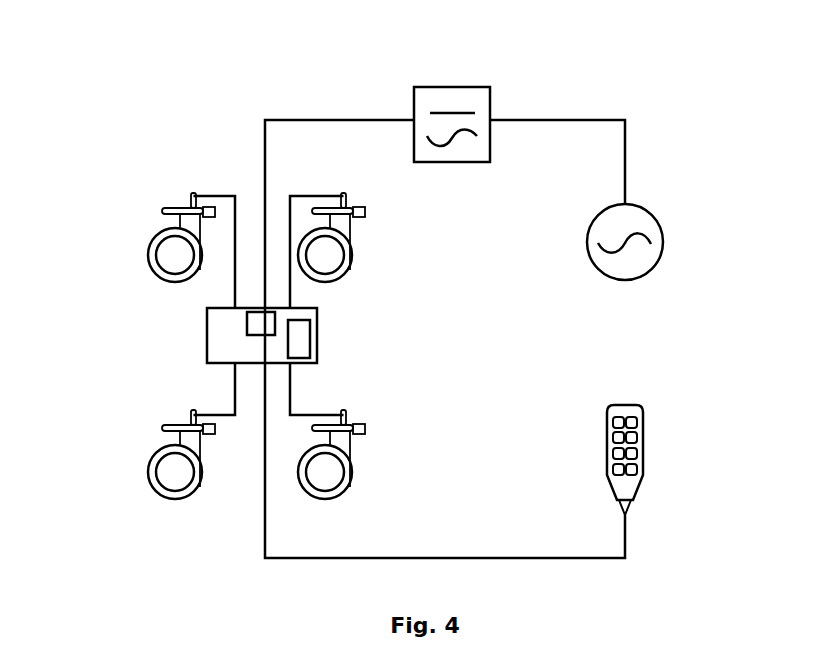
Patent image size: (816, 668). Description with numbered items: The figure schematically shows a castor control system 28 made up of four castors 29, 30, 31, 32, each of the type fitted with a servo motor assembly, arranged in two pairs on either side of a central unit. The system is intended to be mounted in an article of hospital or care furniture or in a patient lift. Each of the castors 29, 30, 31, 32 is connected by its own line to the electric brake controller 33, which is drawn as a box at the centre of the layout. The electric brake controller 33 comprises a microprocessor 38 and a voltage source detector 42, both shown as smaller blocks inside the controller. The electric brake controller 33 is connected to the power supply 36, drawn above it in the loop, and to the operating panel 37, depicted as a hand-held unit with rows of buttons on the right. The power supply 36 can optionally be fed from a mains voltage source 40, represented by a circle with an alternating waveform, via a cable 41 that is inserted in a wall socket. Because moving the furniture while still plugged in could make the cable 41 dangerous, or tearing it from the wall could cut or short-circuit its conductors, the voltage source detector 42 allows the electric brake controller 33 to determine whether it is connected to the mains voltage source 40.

The castor control system 28 is at (305, 58).
The castor 29 is at (350, 258).
The castor 30 is at (338, 495).
The castor 31 is at (151, 237).
The castor 32 is at (161, 493).
The electric brake controller 33 is at (205, 348).
The power supply 36 is at (442, 165).
The operating panel 37 is at (606, 433).
The microprocessor 38 is at (300, 350).
The mains voltage source 40 is at (663, 246).
The cable 41 is at (557, 120).
The voltage source detector 42 is at (253, 323).